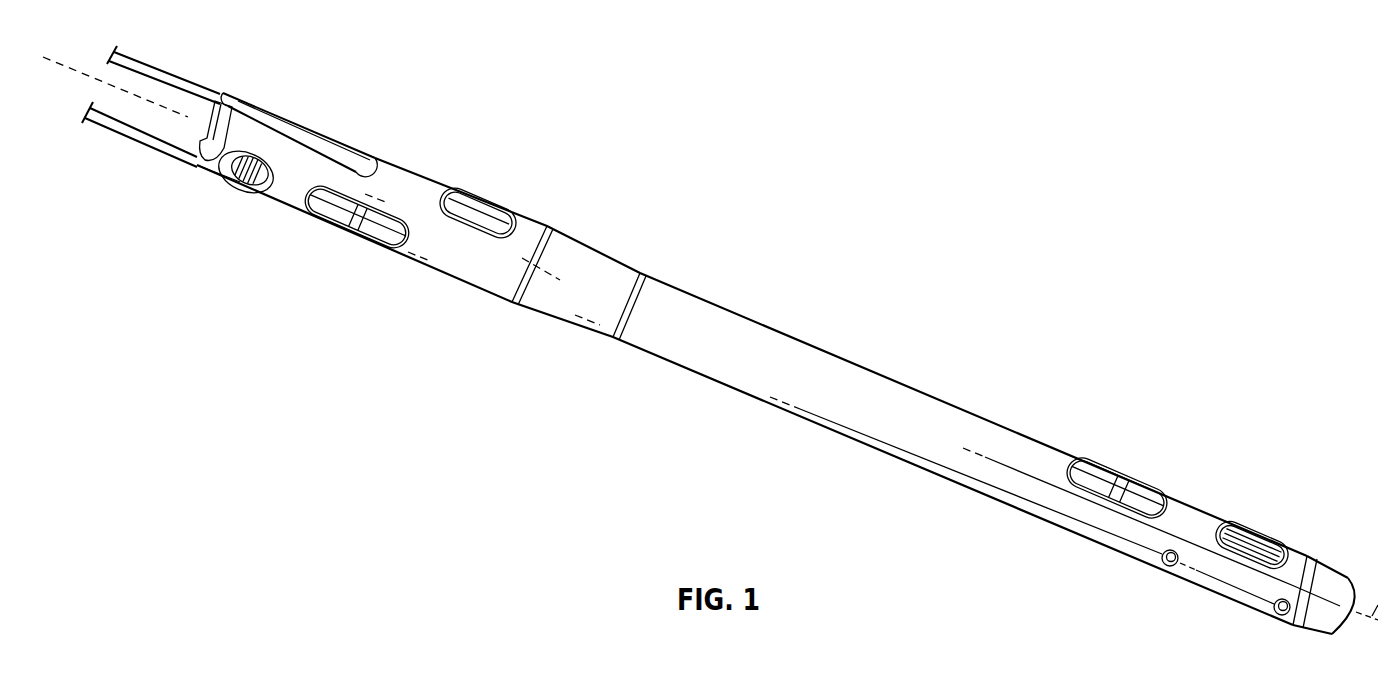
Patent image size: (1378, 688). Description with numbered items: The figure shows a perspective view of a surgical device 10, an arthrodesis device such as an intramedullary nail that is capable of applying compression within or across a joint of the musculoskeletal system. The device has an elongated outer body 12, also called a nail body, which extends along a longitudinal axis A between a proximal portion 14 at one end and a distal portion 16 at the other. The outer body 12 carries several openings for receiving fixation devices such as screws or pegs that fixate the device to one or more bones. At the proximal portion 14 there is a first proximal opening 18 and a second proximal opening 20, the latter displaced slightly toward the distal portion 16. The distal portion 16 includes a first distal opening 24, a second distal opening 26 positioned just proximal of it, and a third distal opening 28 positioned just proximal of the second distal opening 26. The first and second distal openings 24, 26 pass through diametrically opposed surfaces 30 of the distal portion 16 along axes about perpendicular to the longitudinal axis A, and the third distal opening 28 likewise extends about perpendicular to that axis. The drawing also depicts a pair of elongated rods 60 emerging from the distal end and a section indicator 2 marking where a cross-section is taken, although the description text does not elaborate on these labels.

The surgical device 10 is at (1050, 178).
The outer body 12 is at (913, 386).
The proximal portion 14 is at (1180, 606).
The distal portion 16 is at (296, 254).
The first proximal opening 18 is at (1256, 540).
The second proximal opening 20 is at (1118, 478).
The first distal opening 24 is at (244, 178).
The second distal opening 26 is at (355, 235).
The third distal opening 28 is at (484, 200).
The diametrically opposed surfaces 30 is at (313, 118).
The rods 60 is at (136, 62).
The hook / section line 2 is at (203, 170).
The longitudinal axis A is at (1377, 642).